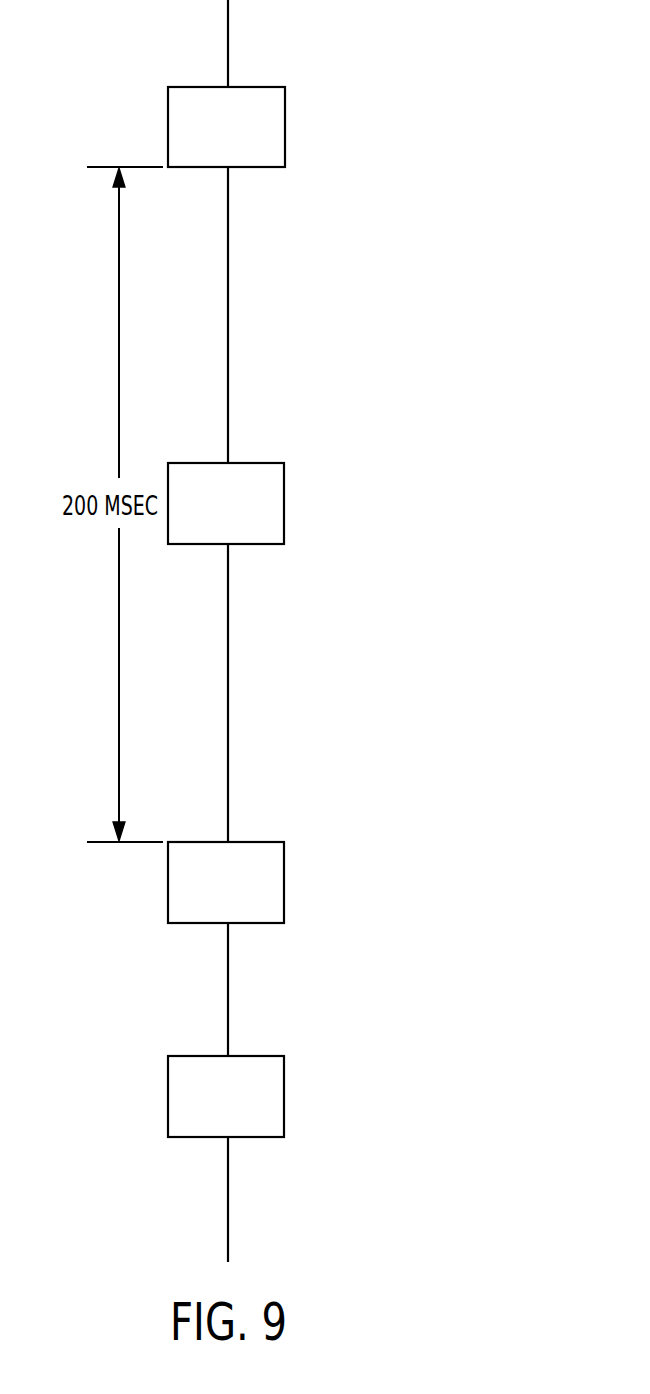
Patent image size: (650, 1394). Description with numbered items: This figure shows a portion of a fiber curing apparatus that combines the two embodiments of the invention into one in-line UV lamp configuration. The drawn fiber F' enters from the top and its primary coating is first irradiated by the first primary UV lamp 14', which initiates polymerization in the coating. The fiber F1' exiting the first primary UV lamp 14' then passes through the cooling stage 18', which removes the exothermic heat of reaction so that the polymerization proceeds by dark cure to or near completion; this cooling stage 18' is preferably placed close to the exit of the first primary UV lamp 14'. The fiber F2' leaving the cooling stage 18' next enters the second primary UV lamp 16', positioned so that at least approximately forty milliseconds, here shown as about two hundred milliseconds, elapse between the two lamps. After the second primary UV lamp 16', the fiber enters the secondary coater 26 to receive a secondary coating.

The drawn fiber F' is at (262, 43).
The first primary UV lamp 14' is at (261, 127).
The fiber F1' is at (267, 315).
The cooling stage 18' is at (261, 503).
The second intermediate frame signal F2' is at (267, 693).
The second primary UV lamp 16' is at (261, 882).
The secondary coater 26 is at (284, 1093).